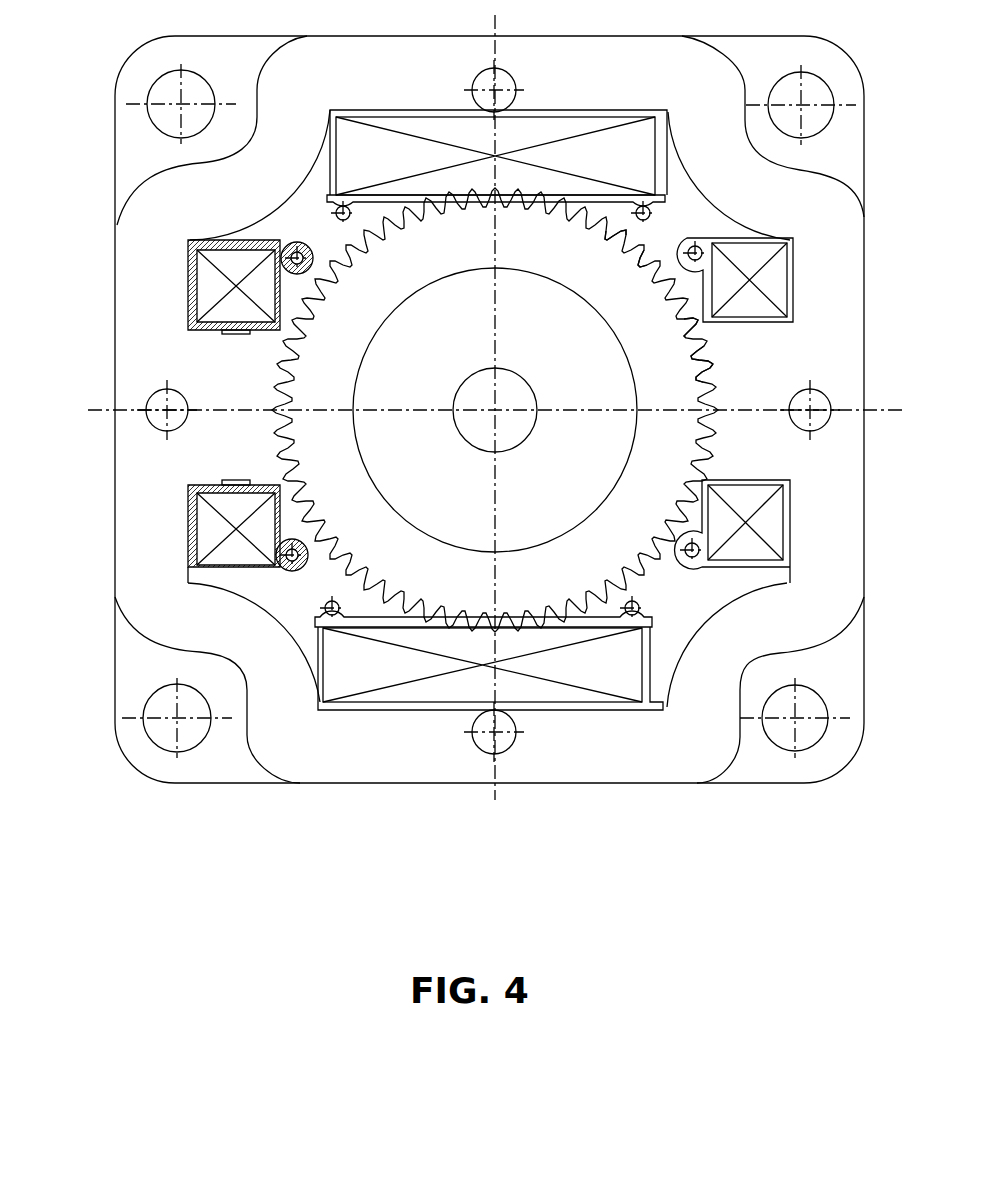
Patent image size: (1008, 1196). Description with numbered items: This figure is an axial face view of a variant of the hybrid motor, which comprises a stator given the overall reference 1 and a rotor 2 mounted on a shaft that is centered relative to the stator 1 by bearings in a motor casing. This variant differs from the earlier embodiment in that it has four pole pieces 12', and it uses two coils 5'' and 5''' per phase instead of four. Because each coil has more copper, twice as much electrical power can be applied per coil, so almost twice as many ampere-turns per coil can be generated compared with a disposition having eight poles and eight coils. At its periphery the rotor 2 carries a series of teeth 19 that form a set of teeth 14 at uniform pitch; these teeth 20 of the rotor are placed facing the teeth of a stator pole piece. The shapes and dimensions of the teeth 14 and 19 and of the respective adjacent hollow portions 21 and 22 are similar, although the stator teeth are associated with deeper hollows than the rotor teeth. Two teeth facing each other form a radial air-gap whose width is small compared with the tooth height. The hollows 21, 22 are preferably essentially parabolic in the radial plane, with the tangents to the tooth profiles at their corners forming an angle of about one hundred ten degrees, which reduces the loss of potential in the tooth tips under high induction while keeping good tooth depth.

The stator 1 is at (862, 612).
The rotor 2 is at (649, 562).
The coil 5'' is at (477, 531).
The coil 5''' is at (491, 433).
The pole piece 12' is at (486, 390).
The set of teeth 14 is at (701, 358).
The teeth 19 is at (618, 243).
The teeth of the rotor 20 is at (637, 277).
The hollow portion 21 is at (708, 373).
The hollow portion 22 is at (682, 334).